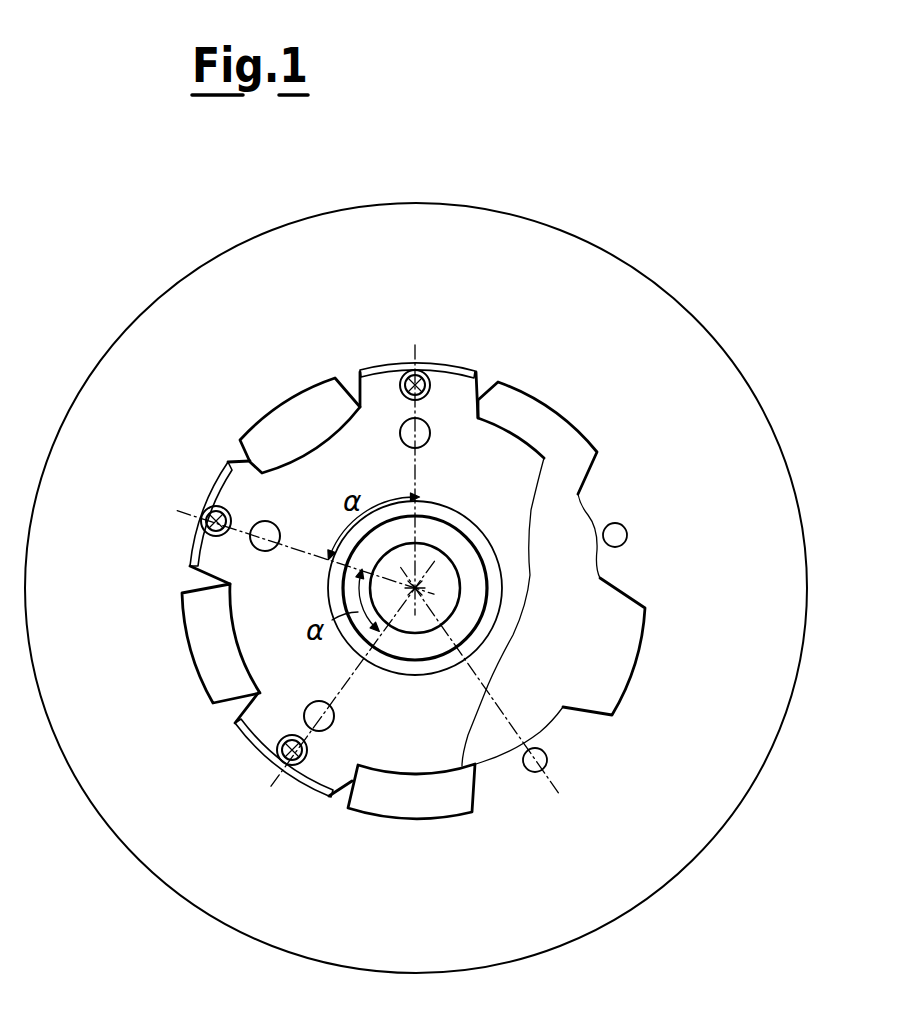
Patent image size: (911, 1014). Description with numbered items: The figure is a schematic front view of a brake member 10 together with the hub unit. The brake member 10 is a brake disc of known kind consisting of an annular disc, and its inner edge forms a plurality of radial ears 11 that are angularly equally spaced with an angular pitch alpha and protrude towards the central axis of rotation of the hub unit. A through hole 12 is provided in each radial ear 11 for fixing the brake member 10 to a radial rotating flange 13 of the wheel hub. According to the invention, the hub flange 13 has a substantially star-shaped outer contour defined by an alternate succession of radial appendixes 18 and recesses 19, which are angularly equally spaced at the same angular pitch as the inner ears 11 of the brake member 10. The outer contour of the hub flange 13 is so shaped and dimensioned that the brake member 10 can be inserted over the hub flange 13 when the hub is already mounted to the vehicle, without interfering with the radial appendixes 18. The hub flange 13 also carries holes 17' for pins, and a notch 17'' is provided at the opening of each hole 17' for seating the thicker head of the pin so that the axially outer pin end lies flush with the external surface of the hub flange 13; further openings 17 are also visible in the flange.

The brake member 10 is at (603, 268).
The radial ear 11 is at (606, 565).
The through hole 12 is at (626, 542).
The hub flange 13 is at (523, 516).
The hole 17 is at (340, 574).
The hole 17' is at (279, 578).
The notch 17'' is at (315, 575).
The radial appendix 18 is at (455, 371).
The recess 19 is at (299, 398).